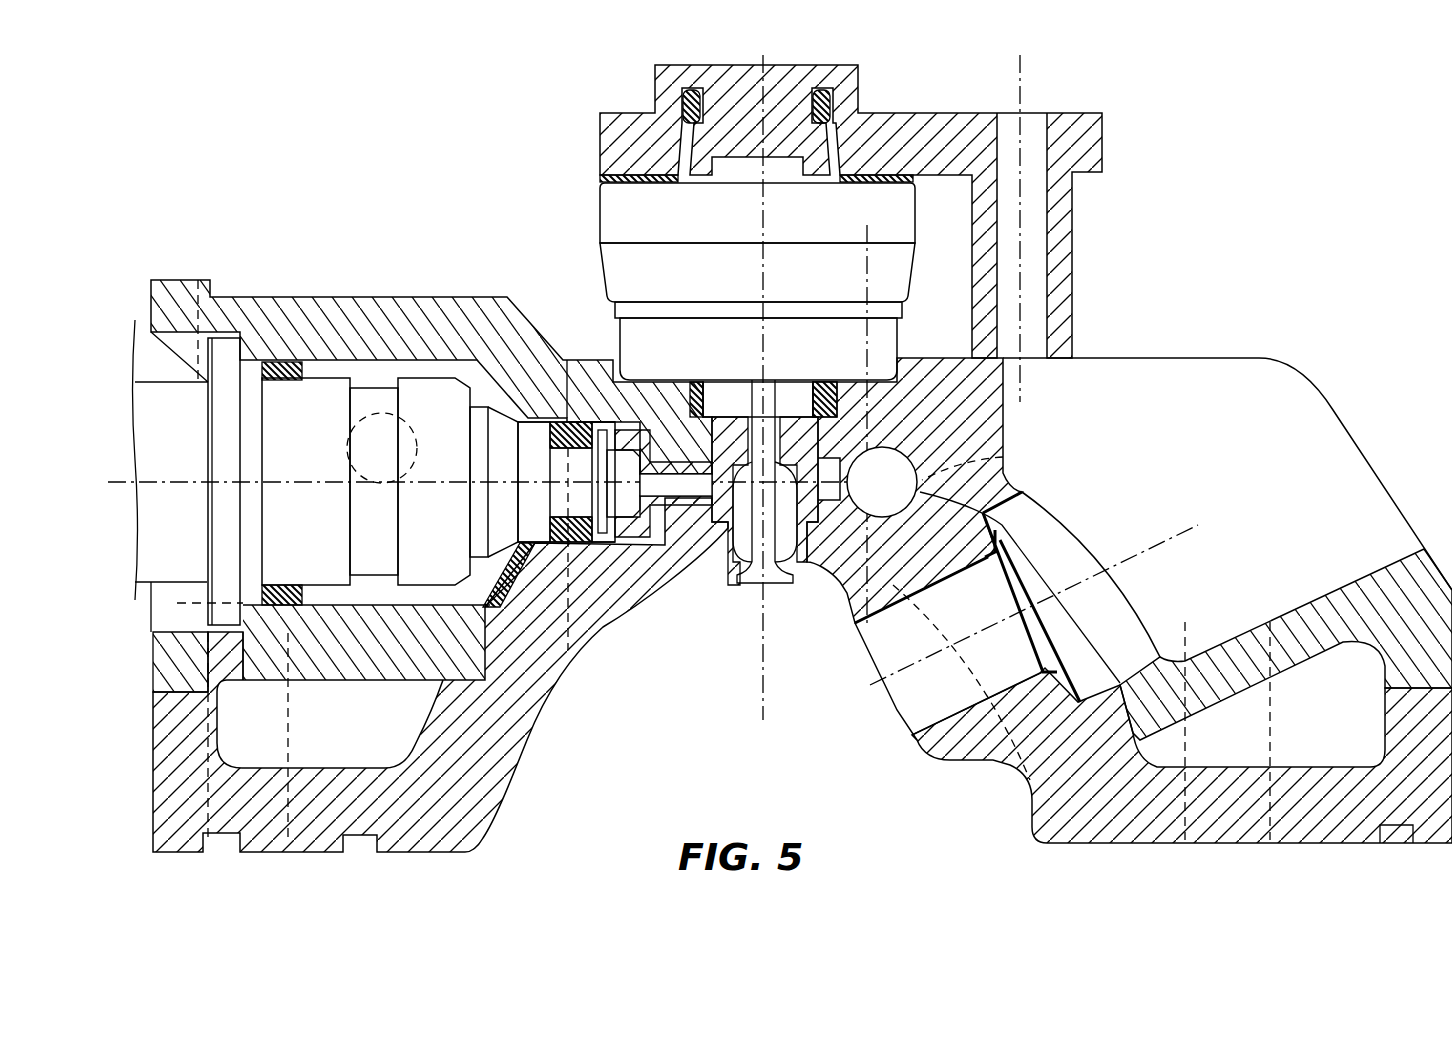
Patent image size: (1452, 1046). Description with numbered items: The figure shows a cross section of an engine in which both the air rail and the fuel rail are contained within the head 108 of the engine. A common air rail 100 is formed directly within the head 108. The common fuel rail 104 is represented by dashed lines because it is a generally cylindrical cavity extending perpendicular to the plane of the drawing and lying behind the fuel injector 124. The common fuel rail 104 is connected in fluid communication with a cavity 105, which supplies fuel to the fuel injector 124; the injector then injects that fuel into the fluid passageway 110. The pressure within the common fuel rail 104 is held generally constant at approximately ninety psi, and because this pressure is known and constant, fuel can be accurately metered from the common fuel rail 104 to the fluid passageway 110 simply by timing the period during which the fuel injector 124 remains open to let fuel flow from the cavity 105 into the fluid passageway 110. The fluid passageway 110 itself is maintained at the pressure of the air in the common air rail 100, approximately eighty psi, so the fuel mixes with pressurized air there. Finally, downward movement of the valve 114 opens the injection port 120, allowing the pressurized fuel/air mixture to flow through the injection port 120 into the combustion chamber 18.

The combustion chamber 18 is at (633, 710).
The common air rail 100 is at (901, 495).
The common fuel rail 104 is at (378, 420).
The cavity 105 is at (455, 370).
The head 108 is at (1125, 840).
The fluid passageway 110 is at (740, 535).
The valve 114 is at (752, 572).
The injection port 120 is at (790, 587).
The fuel injector 124 is at (320, 393).